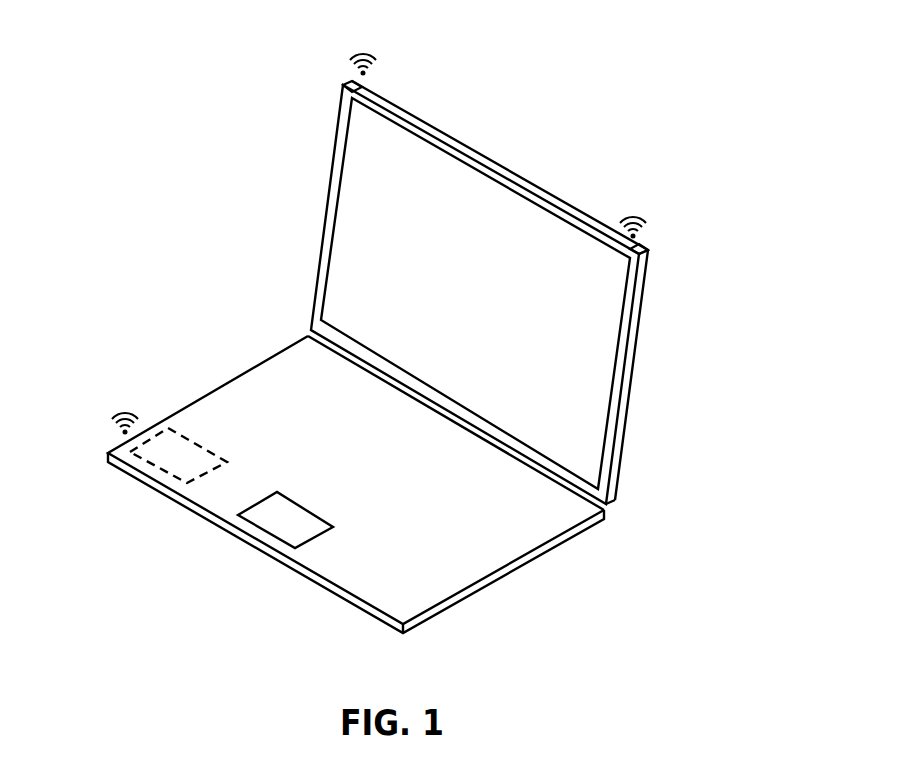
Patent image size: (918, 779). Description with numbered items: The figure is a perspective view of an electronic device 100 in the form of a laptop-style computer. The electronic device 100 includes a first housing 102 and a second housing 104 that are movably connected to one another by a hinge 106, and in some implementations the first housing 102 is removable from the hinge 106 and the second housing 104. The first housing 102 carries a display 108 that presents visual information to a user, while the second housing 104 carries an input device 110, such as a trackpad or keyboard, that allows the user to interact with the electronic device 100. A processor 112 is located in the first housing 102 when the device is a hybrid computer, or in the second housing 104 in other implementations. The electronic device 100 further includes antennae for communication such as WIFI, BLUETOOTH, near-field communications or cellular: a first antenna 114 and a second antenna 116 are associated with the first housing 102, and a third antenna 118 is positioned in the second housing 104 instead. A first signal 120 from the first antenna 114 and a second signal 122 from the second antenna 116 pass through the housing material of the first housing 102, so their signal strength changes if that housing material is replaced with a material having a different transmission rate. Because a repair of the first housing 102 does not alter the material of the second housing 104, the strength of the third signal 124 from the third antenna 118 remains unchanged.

The electronic device 100 is at (545, 138).
The first housing 102 is at (641, 305).
The second housing 104 is at (520, 568).
The hinge 106 is at (610, 512).
The display 108 is at (608, 355).
The input device 110 is at (280, 532).
The processor 112 is at (656, 441).
The first antenna 114 is at (358, 88).
The second antenna 116 is at (641, 252).
The third antenna 118 is at (193, 462).
The first signal 120 is at (364, 56).
The second signal 122 is at (628, 220).
The third signal 124 is at (112, 418).